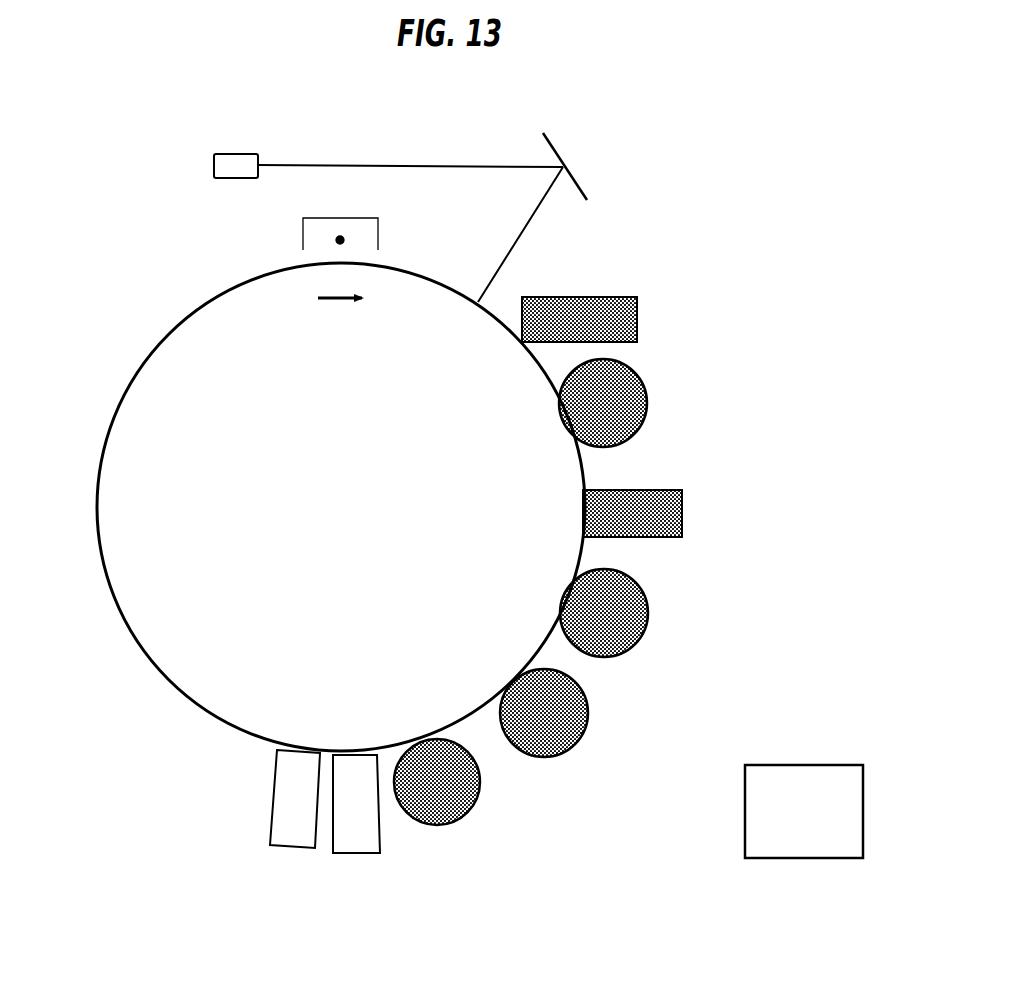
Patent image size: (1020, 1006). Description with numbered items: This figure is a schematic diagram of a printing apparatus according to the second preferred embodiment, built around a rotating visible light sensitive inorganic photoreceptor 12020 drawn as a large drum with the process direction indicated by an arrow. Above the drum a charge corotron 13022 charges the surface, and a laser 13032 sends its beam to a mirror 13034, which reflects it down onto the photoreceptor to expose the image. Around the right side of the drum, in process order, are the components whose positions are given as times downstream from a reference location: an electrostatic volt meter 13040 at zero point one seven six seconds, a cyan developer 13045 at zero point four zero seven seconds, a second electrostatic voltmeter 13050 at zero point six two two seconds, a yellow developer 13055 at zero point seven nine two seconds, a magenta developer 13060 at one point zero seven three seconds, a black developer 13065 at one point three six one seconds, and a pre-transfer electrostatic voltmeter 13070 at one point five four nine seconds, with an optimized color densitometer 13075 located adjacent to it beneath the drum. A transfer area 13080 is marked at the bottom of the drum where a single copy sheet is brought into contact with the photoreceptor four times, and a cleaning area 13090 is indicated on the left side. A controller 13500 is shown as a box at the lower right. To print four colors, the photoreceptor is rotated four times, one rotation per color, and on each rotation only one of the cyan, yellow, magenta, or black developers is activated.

The photoreceptor drum 12020 is at (205, 300).
The charge corotron 13022 is at (355, 218).
The laser 13032 is at (250, 154).
The mirror 13034 is at (565, 152).
The electrostatic volt meter 13040 is at (573, 297).
The cyan developer 13045 is at (638, 368).
The electrostatic voltmeter 13050 is at (633, 490).
The yellow developer 13055 is at (640, 588).
The magenta developer 13060 is at (586, 700).
The black developer 13065 is at (484, 790).
The pre-transfer electrostatic voltmeter 13070 is at (380, 840).
The optimized color densitometer 13075 is at (268, 840).
The photoreceptor transfer area 13080 is at (196, 719).
The cleaning area 13090 is at (96, 428).
The controller 13500 is at (810, 765).